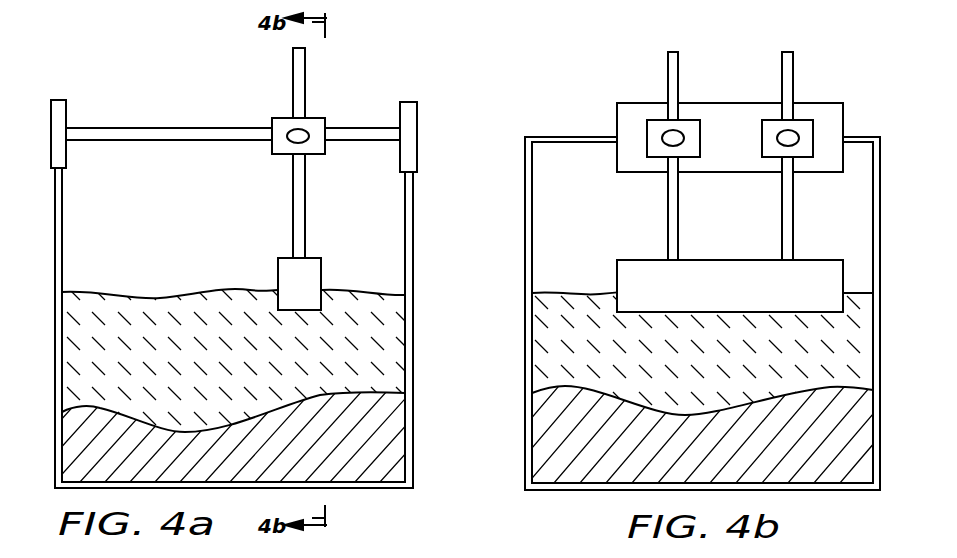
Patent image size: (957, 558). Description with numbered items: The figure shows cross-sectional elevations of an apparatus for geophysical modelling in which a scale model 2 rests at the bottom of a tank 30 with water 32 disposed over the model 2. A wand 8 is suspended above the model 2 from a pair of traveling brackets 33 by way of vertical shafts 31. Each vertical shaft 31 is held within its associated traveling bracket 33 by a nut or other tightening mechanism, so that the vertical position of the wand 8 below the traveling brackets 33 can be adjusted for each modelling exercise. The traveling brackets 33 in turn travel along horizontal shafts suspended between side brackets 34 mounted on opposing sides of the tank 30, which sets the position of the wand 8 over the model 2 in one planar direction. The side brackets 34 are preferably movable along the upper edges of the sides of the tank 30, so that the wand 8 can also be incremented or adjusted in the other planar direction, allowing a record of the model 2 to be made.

In FIG. 4A, the model 2 is at (243, 469).
In FIG. 4B, the model 2 is at (711, 464).
In FIG. 4A, the wand 8 is at (307, 299).
In FIG. 4B, the wand 8 is at (738, 300).
In FIG. 4A, the tank 30 is at (413, 242).
In FIG. 4B, the tank 30 is at (525, 213).
In FIG. 4A, the vertical shaft 31 is at (293, 211).
In FIG. 4B, the vertical shaft 31 is at (668, 213).
In FIG. 4A, the water 32 is at (248, 376).
In FIG. 4B, the water 32 is at (716, 377).
In FIG. 4A, the traveling bracket 33 is at (285, 118).
In FIG. 4B, the traveling bracket 33 is at (762, 143).
In FIG. 4A, the side bracket 34 is at (58, 100).
In FIG. 4B, the side bracket 34 is at (826, 103).